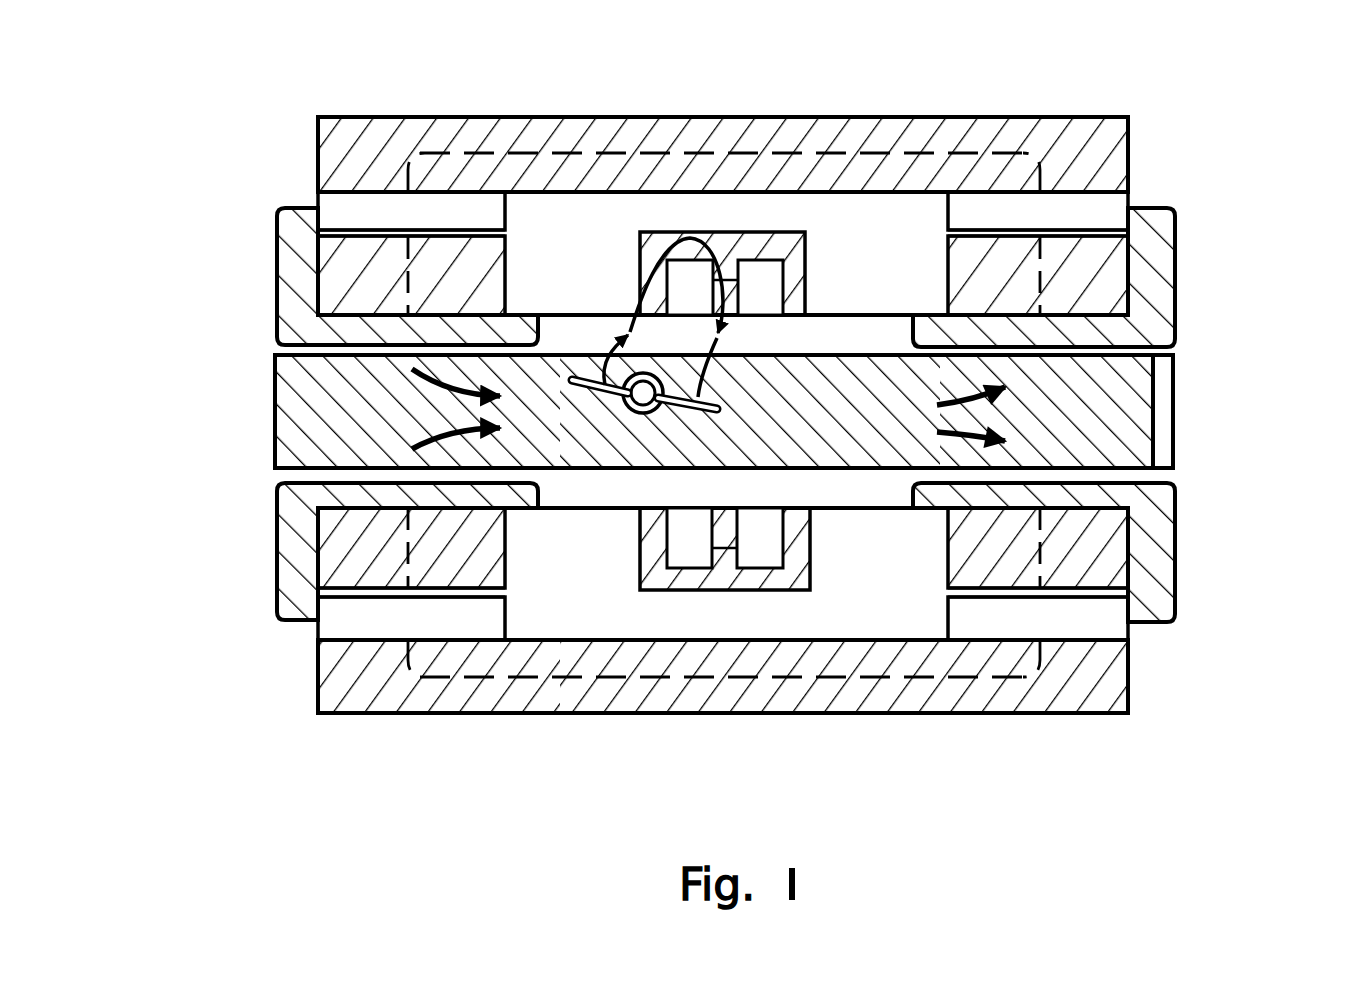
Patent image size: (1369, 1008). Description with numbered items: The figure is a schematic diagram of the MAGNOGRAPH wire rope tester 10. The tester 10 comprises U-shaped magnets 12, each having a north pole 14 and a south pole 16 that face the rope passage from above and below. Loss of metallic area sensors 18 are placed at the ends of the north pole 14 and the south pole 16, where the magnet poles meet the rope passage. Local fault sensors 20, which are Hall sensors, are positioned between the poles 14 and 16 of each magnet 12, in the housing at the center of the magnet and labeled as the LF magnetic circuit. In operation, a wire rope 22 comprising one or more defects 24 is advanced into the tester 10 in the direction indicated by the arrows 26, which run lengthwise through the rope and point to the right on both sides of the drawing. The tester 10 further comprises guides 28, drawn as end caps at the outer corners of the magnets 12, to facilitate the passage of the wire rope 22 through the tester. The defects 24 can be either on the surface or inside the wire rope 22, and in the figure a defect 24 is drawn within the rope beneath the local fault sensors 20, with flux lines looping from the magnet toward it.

The tester 10 is at (296, 90).
The U-shaped magnet 12 is at (497, 133).
The north pole 14 is at (333, 208).
The south pole 16 is at (1115, 207).
The loss of metallic area sensor 18 is at (505, 233).
The local fault sensor 20 is at (740, 278).
The wire rope 22 is at (1140, 390).
The defect 24 is at (655, 407).
The arrow 26 is at (243, 413).
The guide 28 is at (285, 302).